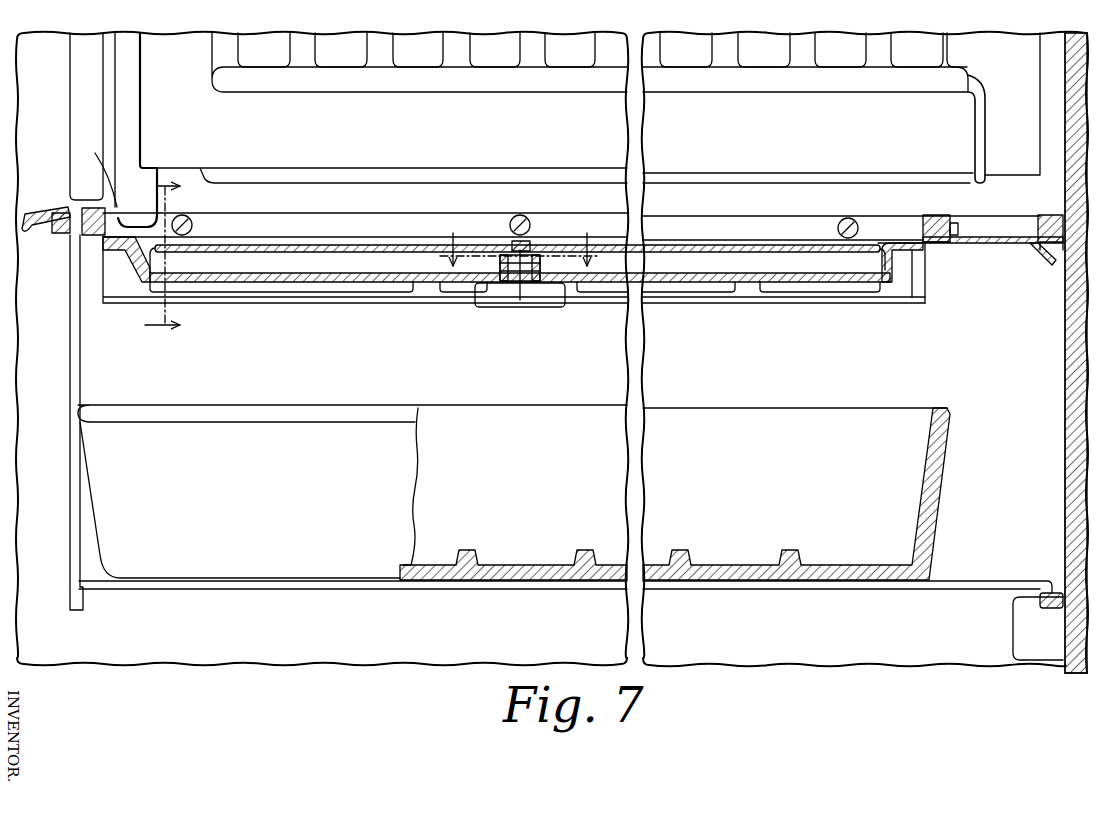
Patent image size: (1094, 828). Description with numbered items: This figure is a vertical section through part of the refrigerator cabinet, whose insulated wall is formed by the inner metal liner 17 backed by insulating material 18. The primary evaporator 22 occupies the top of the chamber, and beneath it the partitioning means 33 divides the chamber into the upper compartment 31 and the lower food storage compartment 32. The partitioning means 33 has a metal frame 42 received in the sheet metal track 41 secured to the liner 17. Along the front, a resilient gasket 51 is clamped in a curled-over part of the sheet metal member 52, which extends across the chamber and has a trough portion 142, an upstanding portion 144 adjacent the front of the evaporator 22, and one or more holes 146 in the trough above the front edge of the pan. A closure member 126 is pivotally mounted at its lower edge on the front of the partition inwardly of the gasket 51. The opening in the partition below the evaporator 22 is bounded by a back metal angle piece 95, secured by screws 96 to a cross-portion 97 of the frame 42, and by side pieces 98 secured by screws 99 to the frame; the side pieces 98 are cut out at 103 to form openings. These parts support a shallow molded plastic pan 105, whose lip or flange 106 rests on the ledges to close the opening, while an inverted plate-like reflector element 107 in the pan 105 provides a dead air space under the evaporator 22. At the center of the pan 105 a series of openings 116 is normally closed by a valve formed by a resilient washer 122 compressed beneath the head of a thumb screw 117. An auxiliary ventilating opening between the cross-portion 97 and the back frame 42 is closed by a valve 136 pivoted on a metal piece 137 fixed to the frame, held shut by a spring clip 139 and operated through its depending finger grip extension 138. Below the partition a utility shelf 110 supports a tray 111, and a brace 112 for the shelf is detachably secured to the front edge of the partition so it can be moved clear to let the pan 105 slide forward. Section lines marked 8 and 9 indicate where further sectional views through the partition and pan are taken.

The primary evaporator 22 is at (160, 60).
The closure member 126 is at (70, 84).
The holes 146 is at (96, 173).
The upstanding portion 144 is at (134, 178).
The trough portion 142 is at (118, 207).
The resilient gasket 51 is at (32, 215).
The sheet metal member 52 is at (63, 243).
The brace 112 is at (68, 357).
The section line 8- 8 is at (170, 256).
The section line 9- 9 is at (520, 240).
The reflector element 107 is at (332, 247).
The upper compartment 31 is at (365, 135).
The partitioning means 33 is at (735, 212).
The side pieces 98 is at (775, 243).
The screws 99 is at (840, 230).
The lip or flange 106 is at (900, 243).
The screws 96 is at (923, 230).
The cross-portion 97 is at (946, 217).
The valve 136 is at (992, 237).
The metal frame 42 is at (1048, 216).
The spring clip 139 is at (947, 243).
The metal piece 137 is at (1036, 253).
The finger grip extension 138 is at (1047, 258).
The sheet metal track 41 is at (1055, 250).
The cut-out openings 103 is at (768, 293).
The shallow pan 105 is at (812, 288).
The back metal angle piece 95 is at (912, 262).
The openings 116 is at (546, 283).
The thumb screw 117 is at (500, 303).
The resilient washer 122 is at (520, 283).
The inner metal liner member 17 is at (1066, 330).
The insulating material 18 is at (1076, 385).
The tray 111 is at (312, 402).
The utility shelf 110 is at (965, 580).
The lower food storage compartment 32 is at (675, 525).